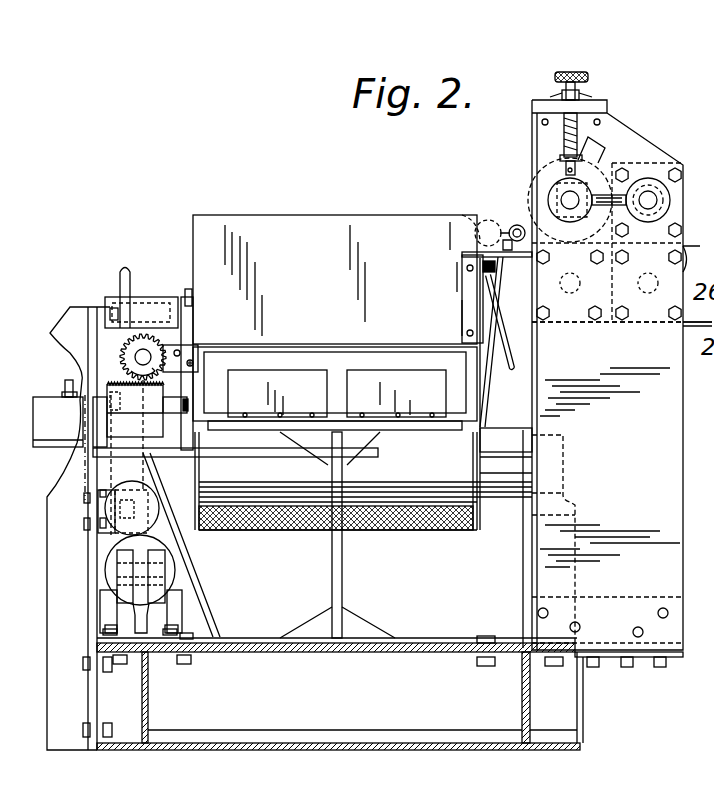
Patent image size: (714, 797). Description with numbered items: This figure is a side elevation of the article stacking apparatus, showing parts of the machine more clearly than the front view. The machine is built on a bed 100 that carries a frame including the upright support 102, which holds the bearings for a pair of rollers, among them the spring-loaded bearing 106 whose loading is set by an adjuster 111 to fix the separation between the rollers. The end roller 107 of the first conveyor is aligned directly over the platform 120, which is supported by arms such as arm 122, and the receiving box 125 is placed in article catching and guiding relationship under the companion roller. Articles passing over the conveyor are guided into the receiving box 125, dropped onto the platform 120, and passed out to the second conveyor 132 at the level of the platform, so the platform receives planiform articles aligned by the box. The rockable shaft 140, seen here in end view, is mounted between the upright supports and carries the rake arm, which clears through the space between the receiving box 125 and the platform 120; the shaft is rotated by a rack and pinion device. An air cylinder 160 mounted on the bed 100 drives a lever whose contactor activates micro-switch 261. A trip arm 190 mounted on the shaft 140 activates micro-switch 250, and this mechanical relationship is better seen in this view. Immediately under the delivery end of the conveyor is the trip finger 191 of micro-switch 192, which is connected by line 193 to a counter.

The bed 100 is at (148, 694).
The upright support 102 is at (53, 624).
The bearing 106 is at (362, 360).
The roller 107 is at (584, 323).
The adjuster 111 is at (580, 122).
The platform 120 is at (443, 433).
The arm 122 is at (342, 556).
The receiving box 125 is at (360, 236).
The conveyor 132 is at (436, 532).
The rockable shaft 140 is at (146, 357).
The air cylinder 160 is at (170, 565).
The trip arm 190 is at (126, 263).
The trip finger 191 is at (481, 264).
The micro-switch 192 is at (493, 284).
The line 193 is at (507, 358).
The micro-switch 250 is at (45, 412).
The micro-switch 261 is at (93, 518).